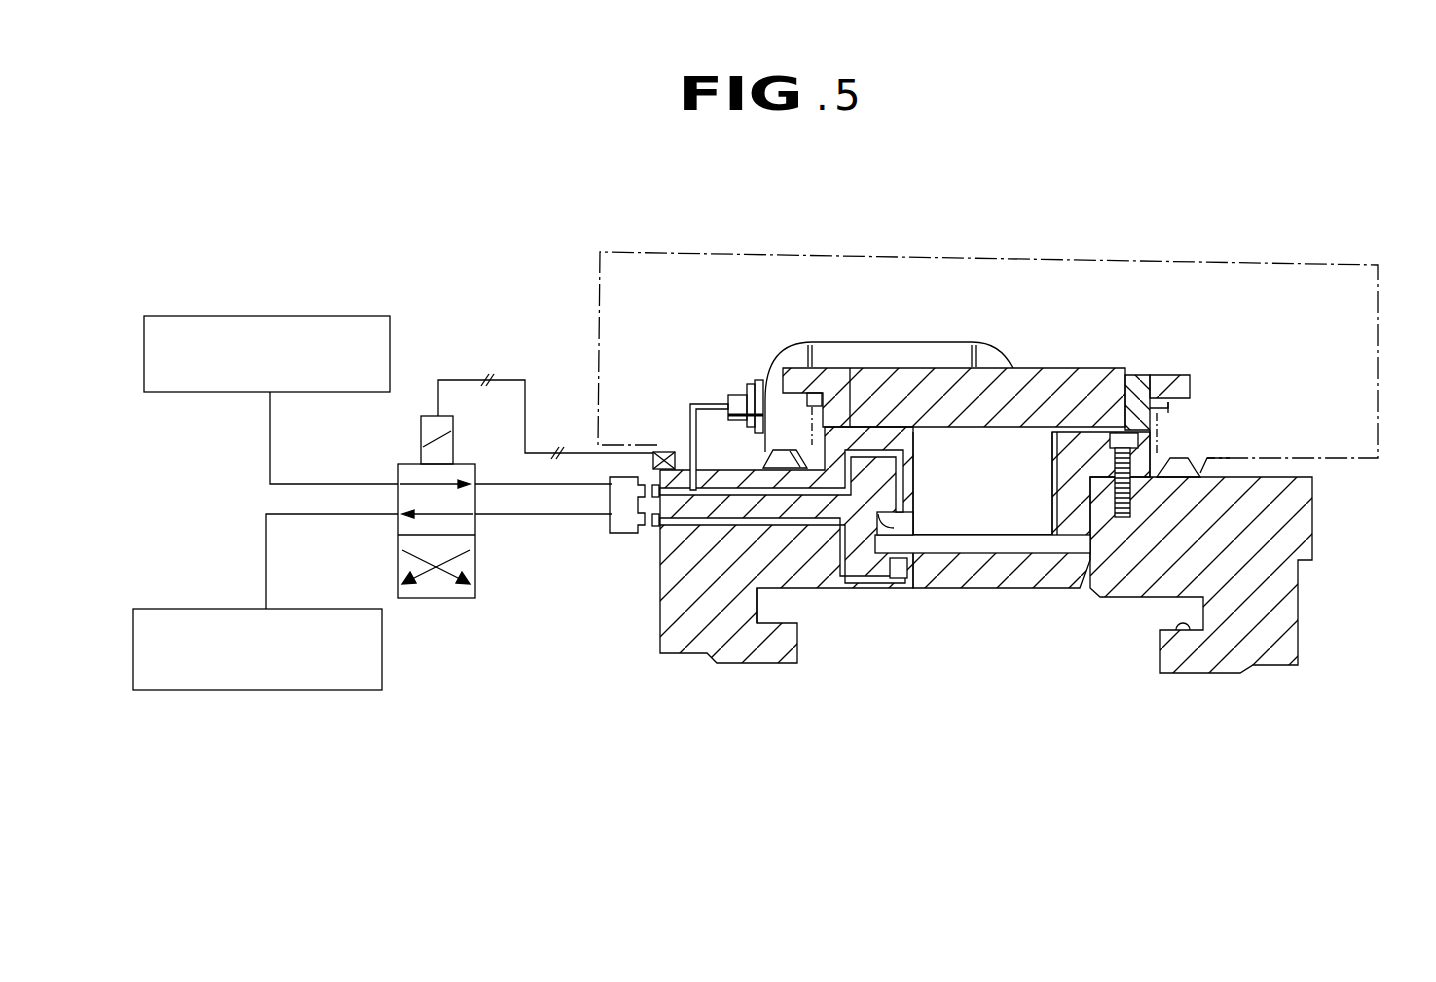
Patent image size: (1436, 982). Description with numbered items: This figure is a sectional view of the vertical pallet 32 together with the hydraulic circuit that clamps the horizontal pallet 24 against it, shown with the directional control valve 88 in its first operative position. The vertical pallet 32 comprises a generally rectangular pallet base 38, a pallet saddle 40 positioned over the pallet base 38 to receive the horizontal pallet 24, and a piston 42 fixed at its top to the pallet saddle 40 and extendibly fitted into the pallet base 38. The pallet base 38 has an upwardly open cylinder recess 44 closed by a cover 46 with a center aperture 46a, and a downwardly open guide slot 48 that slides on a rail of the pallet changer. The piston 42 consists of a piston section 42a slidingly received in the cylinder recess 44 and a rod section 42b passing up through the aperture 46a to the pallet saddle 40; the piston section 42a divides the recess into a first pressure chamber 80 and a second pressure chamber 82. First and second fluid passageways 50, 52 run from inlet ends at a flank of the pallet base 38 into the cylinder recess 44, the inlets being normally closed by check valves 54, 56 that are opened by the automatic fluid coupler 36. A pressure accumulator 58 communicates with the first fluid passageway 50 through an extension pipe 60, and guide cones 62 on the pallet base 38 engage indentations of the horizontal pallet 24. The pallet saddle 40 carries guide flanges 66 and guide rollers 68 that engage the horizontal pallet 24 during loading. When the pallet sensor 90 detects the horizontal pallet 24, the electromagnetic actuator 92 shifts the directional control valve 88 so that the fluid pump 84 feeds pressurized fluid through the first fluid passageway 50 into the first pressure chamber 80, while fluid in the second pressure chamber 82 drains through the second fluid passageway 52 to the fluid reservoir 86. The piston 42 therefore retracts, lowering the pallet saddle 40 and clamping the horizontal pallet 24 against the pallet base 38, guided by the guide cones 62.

The horizontal pallet 24 is at (1052, 275).
The vertical pallet 32 is at (1280, 453).
The automatic fluid coupler 36 is at (614, 532).
The pallet base 38 is at (1290, 555).
The pallet saddle 40 is at (1103, 385).
The piston 42 is at (1010, 676).
The piston section 42a is at (1003, 553).
The rod section 42b is at (1042, 518).
The cylinder recess 44 is at (903, 556).
The cover 46 is at (893, 450).
The center aperture 46a is at (950, 445).
The guide slot 48 is at (1183, 632).
The first fluid passageway 50 is at (688, 605).
The second fluid passageway 52 is at (752, 570).
The check valve 54 is at (648, 488).
The check valve 56 is at (650, 526).
The pressure accumulator 58 is at (845, 345).
The extension pipe 60 is at (714, 400).
The guide cone 62 is at (782, 449).
The guide flange 66 is at (1182, 385).
The guide roller 68 is at (1168, 410).
The first pressure chamber 80 is at (905, 522).
The second pressure chamber 82 is at (900, 580).
The fluid pump 84 is at (318, 316).
The fluid reservoir 86 is at (330, 690).
The directional control valve 88 is at (450, 598).
The pallet sensor 90 is at (655, 452).
The electromagnetic actuator 92 is at (446, 416).